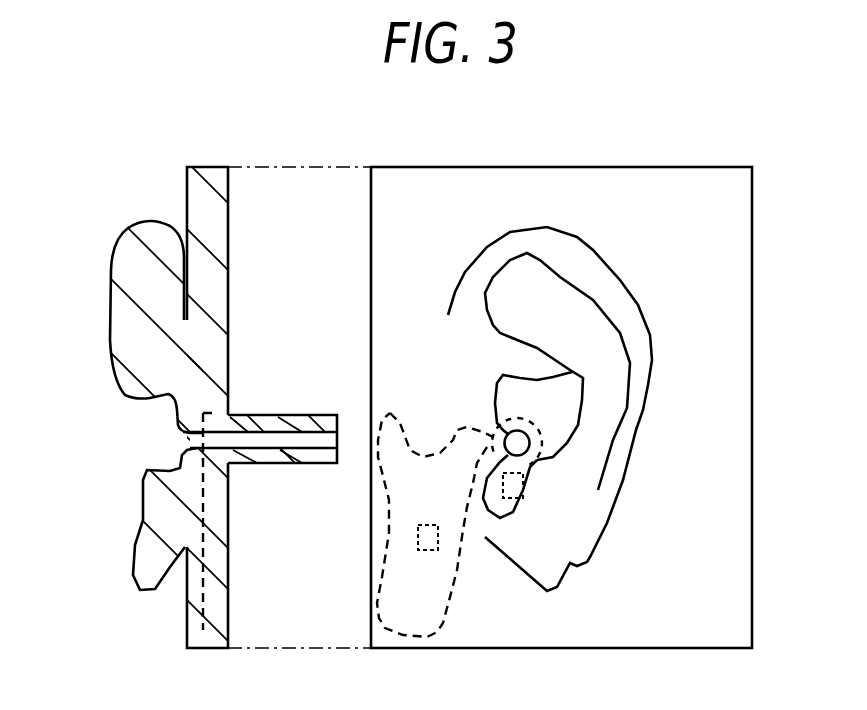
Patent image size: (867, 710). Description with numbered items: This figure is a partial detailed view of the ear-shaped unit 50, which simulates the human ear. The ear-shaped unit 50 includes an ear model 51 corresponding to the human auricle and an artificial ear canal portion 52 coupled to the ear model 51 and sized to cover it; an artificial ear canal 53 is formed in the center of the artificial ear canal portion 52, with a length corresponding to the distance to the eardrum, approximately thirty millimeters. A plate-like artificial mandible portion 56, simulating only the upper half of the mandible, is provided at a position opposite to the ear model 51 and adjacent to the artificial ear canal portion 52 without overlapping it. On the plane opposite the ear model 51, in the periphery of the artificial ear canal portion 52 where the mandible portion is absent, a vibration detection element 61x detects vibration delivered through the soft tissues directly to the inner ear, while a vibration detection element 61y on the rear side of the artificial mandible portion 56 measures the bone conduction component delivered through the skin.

The ear-shaped unit 50 is at (434, 704).
The ear model 51 is at (140, 279).
The artificial ear canal portion 52 is at (308, 425).
The artificial ear canal 53 is at (203, 438).
The artificial mandible portion 56 is at (398, 477).
The vibration detection element 61x is at (523, 486).
The vibration detection element 61y is at (432, 533).